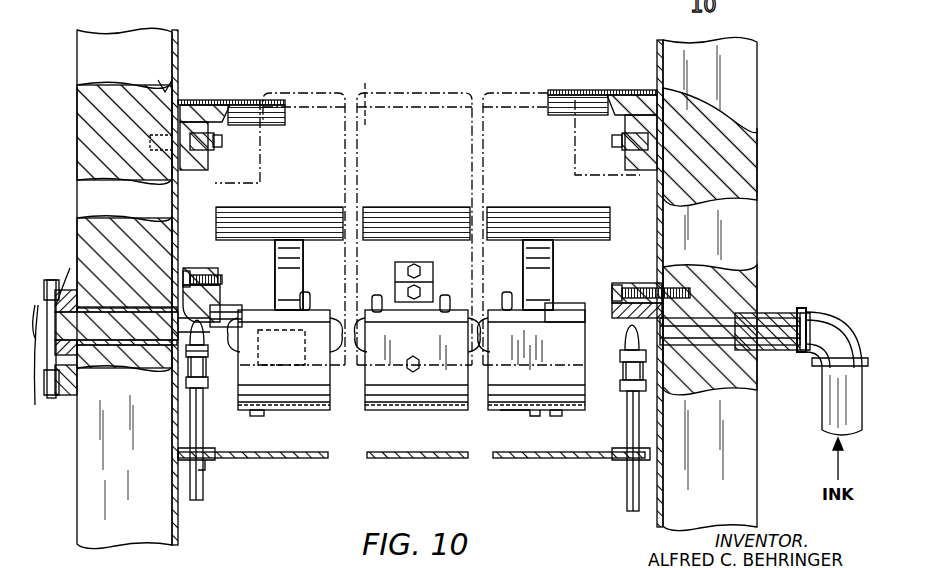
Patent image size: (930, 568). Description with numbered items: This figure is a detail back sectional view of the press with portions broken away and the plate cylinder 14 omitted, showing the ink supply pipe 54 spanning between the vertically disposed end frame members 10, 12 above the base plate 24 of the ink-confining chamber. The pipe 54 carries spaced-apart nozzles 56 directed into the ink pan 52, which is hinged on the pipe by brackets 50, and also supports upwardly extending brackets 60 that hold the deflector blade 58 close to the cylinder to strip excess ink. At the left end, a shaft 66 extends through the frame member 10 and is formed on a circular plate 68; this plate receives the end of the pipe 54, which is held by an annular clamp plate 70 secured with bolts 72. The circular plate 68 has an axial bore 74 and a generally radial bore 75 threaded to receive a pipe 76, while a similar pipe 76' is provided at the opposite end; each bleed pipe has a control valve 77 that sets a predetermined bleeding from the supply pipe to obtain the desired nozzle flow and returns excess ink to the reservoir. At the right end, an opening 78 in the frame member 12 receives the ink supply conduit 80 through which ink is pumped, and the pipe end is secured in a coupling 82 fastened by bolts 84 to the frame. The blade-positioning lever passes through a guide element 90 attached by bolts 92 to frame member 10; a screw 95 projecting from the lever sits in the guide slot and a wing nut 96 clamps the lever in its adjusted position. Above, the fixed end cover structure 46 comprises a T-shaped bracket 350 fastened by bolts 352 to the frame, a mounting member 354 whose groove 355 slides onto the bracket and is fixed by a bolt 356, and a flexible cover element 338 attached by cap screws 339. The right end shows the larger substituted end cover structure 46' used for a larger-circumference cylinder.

The end frame member 10 is at (78, 113).
The end frame member 12 is at (748, 108).
The plate cylinder 14 is at (405, 213).
The base plate 24 is at (564, 459).
The fixed end cover structure 46 is at (231, 119).
The larger end cover structure 46' is at (602, 103).
The brackets 50 is at (270, 414).
The ink pan 52 is at (528, 411).
The ink supply pipe 54 is at (370, 310).
The nozzles 56 is at (445, 310).
The deflector blade 58 is at (417, 206).
The brackets 60 is at (303, 265).
The shaft 66 is at (118, 318).
The circular plate 68 is at (200, 270).
The annular clamp plate 70 is at (220, 296).
The bolts 72 is at (190, 279).
The bore 74 is at (225, 328).
The radially extending bore 75 is at (178, 345).
The pipe 76 is at (208, 444).
The pipe 76' is at (619, 418).
The control valves 77 is at (208, 380).
The opening 78 is at (714, 322).
The ink supply conduit 80 is at (776, 317).
The coupling 82 is at (640, 286).
The bolts 84 is at (626, 288).
The guide element 90 is at (70, 392).
The bolts 92 is at (50, 300).
The screw 95 is at (41, 365).
The wing nut 96 is at (65, 278).
The flexible cover element 338 is at (240, 100).
The cap screws 339 is at (210, 100).
The T-shaped bracket 350 is at (155, 71).
The bolts 352 is at (152, 145).
The mounting member 354 is at (208, 165).
The groove 355 is at (193, 160).
The bolt 356 is at (214, 142).